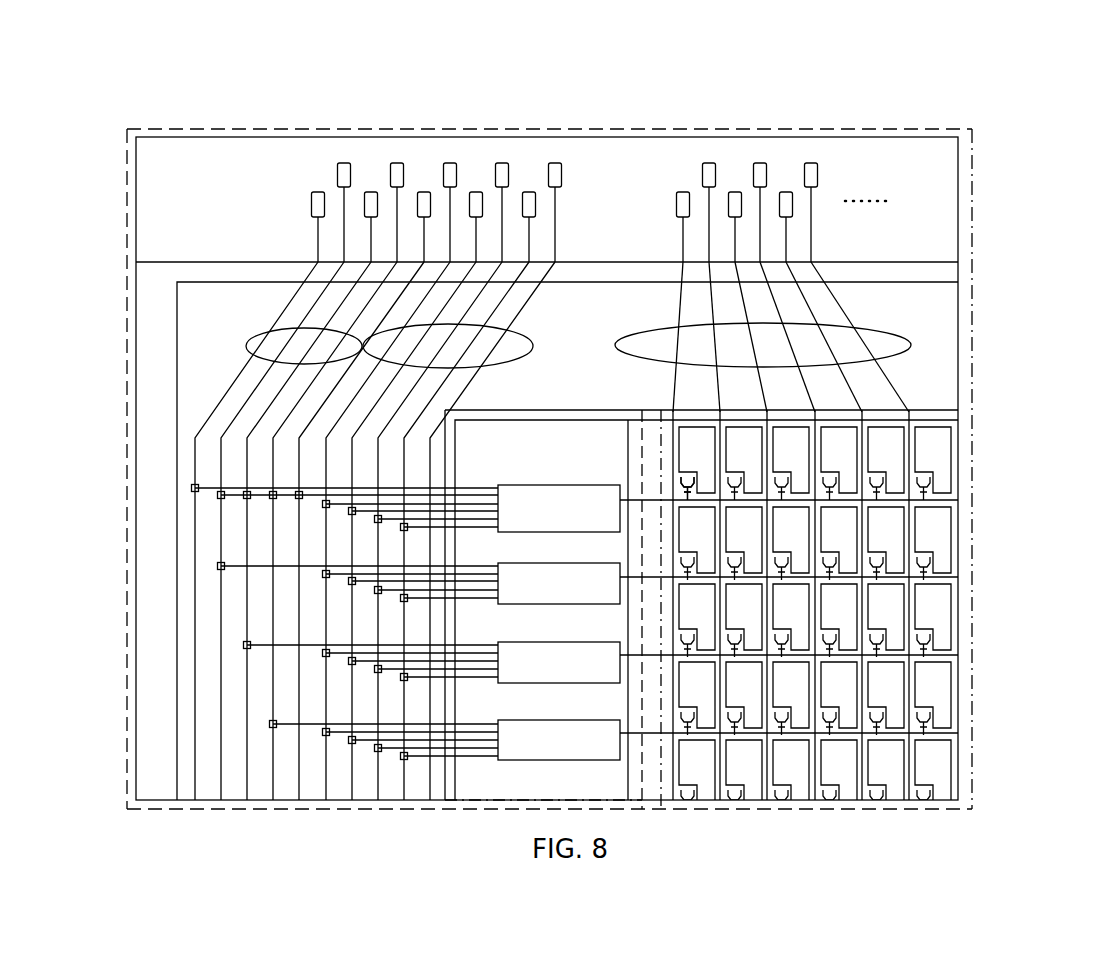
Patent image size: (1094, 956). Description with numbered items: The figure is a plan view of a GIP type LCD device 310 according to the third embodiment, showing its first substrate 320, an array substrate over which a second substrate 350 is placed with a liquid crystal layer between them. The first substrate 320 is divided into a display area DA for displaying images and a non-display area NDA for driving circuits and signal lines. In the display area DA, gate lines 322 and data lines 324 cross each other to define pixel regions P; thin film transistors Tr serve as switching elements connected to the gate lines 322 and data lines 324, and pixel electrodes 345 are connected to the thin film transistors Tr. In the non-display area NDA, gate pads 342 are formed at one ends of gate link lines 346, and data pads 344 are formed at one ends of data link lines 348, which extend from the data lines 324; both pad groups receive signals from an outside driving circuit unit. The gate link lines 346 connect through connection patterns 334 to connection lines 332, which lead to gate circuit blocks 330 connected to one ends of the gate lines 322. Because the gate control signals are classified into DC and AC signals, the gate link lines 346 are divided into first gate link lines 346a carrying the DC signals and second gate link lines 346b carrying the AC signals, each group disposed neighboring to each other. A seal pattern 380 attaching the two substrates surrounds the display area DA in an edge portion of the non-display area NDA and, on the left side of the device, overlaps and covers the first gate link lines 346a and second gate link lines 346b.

The GIP type LCD device 310 is at (912, 120).
The first substrate 320 is at (598, 131).
The gate lines 322 is at (644, 606).
The data lines 324 is at (920, 436).
The gate circuit blocks 330 is at (541, 484).
The connection lines 332 is at (473, 535).
The connection patterns 334 is at (192, 488).
The gate pads 342 is at (563, 122).
The data pads 344 is at (815, 160).
The pixel electrodes 345 is at (699, 408).
The gate link lines 346 is at (262, 232).
The first gate link lines 346a is at (245, 322).
The second gate link lines 346b is at (335, 275).
The data link lines 348 is at (898, 280).
The second substrate 350 is at (245, 260).
The seal pattern 380 is at (192, 729).
The pixel regions P is at (941, 481).
The thin film transistors Tr is at (676, 487).
The non-display area NDA is at (975, 262).
The display area DA is at (975, 632).